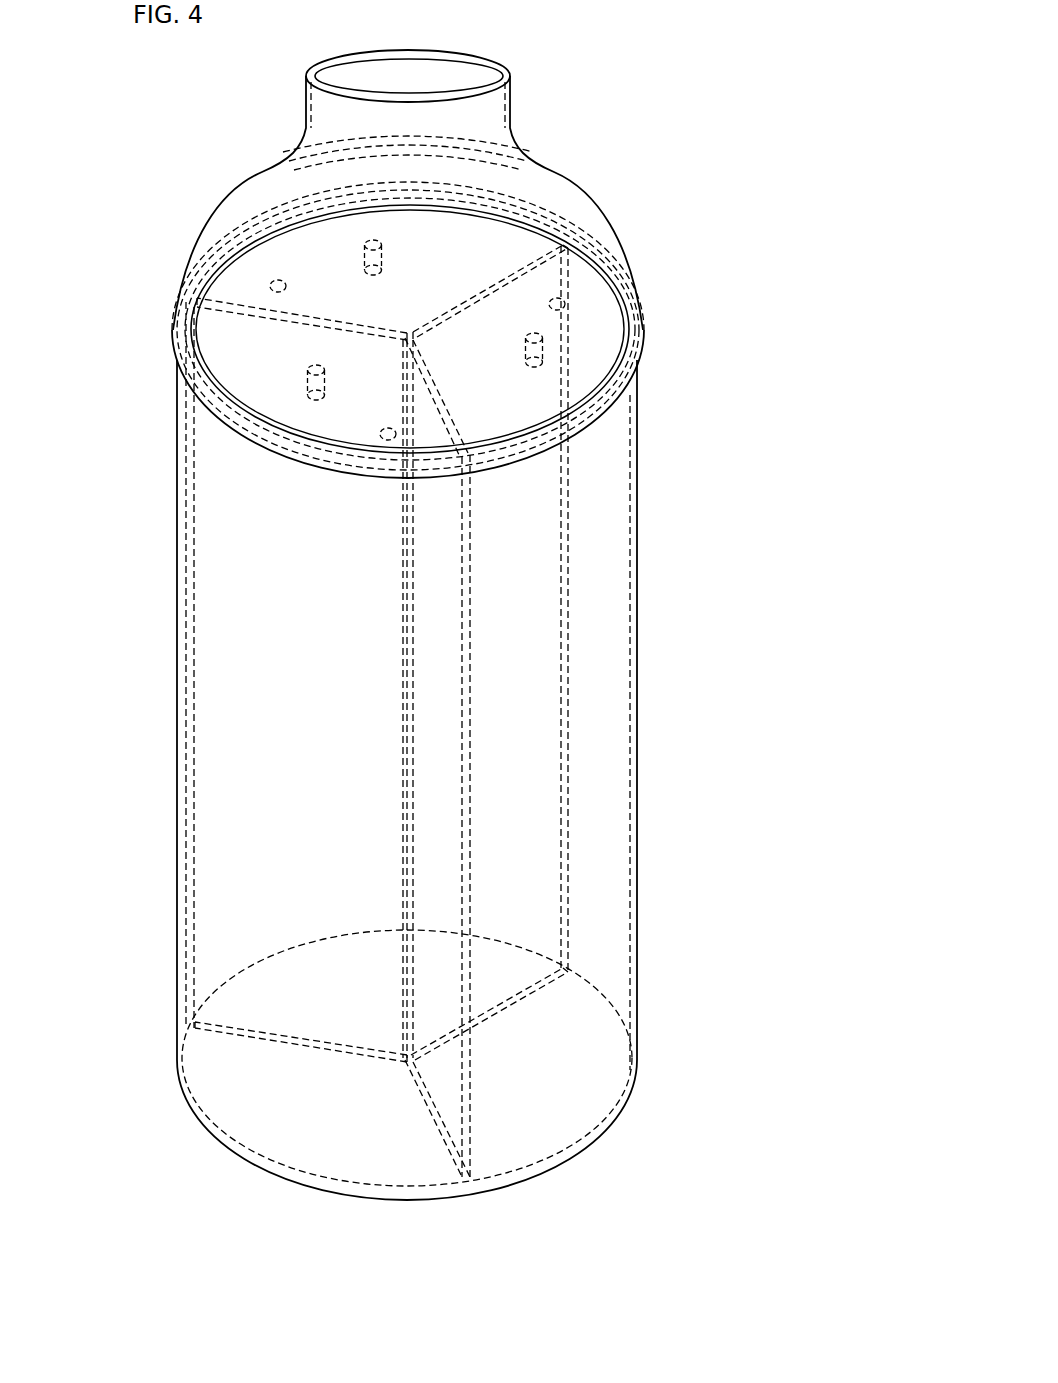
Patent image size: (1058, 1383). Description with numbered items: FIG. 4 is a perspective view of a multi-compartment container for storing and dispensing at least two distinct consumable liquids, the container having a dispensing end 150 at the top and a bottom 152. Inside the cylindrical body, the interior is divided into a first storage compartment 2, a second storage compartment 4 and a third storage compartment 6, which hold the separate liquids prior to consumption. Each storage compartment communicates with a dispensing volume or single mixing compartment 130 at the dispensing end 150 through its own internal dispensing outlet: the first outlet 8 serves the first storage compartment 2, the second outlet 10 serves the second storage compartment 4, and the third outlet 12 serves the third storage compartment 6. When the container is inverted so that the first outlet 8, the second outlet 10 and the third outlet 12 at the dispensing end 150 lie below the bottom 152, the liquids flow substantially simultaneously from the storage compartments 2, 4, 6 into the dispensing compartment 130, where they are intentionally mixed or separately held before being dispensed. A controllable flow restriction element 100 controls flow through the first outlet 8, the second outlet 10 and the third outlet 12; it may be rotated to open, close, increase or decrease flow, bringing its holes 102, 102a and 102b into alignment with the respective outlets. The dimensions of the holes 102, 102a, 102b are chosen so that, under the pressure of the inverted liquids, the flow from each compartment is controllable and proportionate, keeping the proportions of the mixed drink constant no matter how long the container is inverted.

The dispensing end 150 is at (436, 556).
The bottom 152 is at (449, 1131).
The dispensing compartment 130 is at (500, 330).
The flow restriction element 100 is at (511, 691).
The first storage compartment 2 is at (588, 1014).
The second storage compartment 4 is at (343, 1056).
The third storage compartment 6 is at (294, 1158).
The first outlet 8 is at (640, 378).
The second outlet 10 is at (232, 187).
The third outlet 12 is at (182, 396).
The hole 102 is at (237, 490).
The hole 102a is at (160, 256).
The hole 102b is at (673, 225).